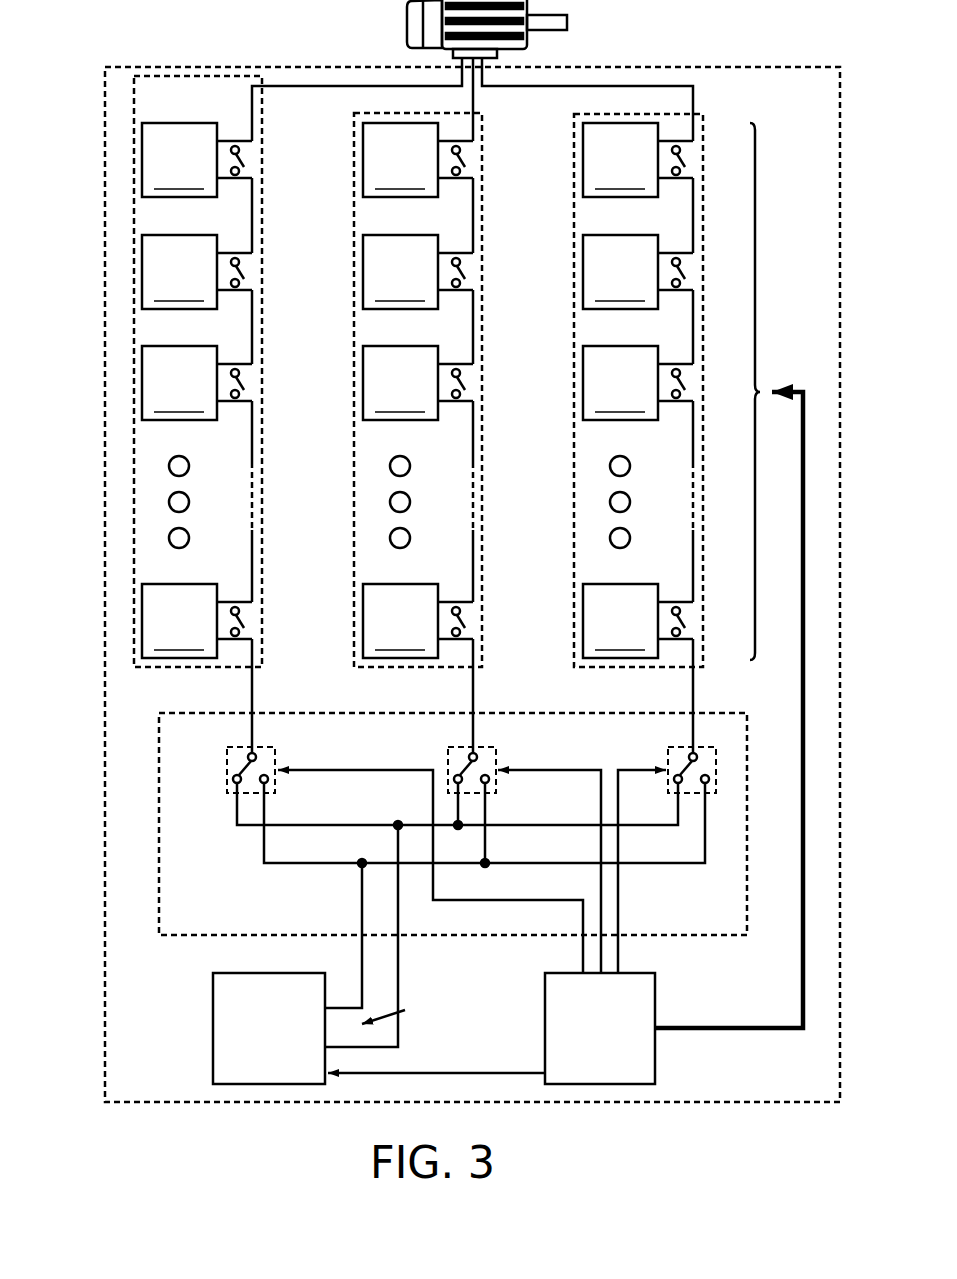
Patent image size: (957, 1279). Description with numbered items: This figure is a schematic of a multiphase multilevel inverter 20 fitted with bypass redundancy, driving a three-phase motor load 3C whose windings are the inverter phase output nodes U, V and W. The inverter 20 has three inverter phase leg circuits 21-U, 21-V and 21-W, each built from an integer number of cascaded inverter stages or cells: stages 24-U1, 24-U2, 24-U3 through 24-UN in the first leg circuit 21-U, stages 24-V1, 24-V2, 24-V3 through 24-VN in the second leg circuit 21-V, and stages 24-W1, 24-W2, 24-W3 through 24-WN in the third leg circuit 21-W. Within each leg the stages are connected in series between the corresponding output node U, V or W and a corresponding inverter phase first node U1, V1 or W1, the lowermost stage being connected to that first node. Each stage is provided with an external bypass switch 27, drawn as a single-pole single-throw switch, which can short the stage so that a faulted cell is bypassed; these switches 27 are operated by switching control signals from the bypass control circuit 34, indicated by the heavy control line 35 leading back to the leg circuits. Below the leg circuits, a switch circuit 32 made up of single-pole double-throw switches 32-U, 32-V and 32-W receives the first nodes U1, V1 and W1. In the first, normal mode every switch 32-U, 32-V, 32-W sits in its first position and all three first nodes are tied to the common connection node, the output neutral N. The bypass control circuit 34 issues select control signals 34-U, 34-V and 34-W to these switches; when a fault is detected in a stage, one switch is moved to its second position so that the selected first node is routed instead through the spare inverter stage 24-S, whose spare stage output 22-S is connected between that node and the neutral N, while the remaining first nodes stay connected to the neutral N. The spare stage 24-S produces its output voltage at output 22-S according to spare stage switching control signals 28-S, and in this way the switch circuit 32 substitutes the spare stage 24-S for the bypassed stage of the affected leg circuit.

The multiphase multilevel inverter 20 is at (105, 103).
The motor 3C is at (528, 50).
The first inverter phase leg circuit 21-U is at (262, 134).
The second inverter phase leg circuit 21-V is at (482, 195).
The third inverter phase leg circuit 21-W is at (574, 128).
The inverter stage 24-U1 is at (197, 160).
The inverter stage 24-U2 is at (197, 272).
The inverter stage 24-U3 is at (197, 383).
The inverter stage 24-UN is at (197, 621).
The inverter stage 24-V1 is at (418, 160).
The inverter stage 24-V2 is at (418, 272).
The inverter stage 24-V3 is at (418, 383).
The inverter stage 24-VN is at (418, 621).
The inverter stage 24-W1 is at (638, 160).
The inverter stage 24-W2 is at (638, 272).
The inverter stage 24-W3 is at (638, 383).
The inverter stage 24-WN is at (638, 621).
The external bypass switch 27 is at (247, 161).
The switch circuit 32 is at (159, 908).
The single pole double throw switch 32-U is at (240, 746).
The single pole double throw switch 32-V is at (461, 746).
The single pole double throw switch 32-W is at (682, 746).
The common connection node N is at (237, 818).
The inverter phase output node U is at (252, 114).
The inverter phase output node V is at (473, 108).
The inverter phase output node W is at (693, 106).
The inverter phase first node U1 is at (252, 702).
The inverter phase first node V1 is at (473, 702).
The inverter phase first node W1 is at (693, 697).
The bypass control circuit 34 is at (636, 973).
The select control signal 34-U is at (527, 900).
The select control signal 34-V is at (601, 888).
The select control signal 34-W is at (618, 898).
The spare inverter stage 24-S is at (233, 973).
The spare stage output 22-S is at (404, 1010).
The spare stage switching control signals 28-S is at (433, 1073).
The bypass switch control signal 35 is at (770, 1028).